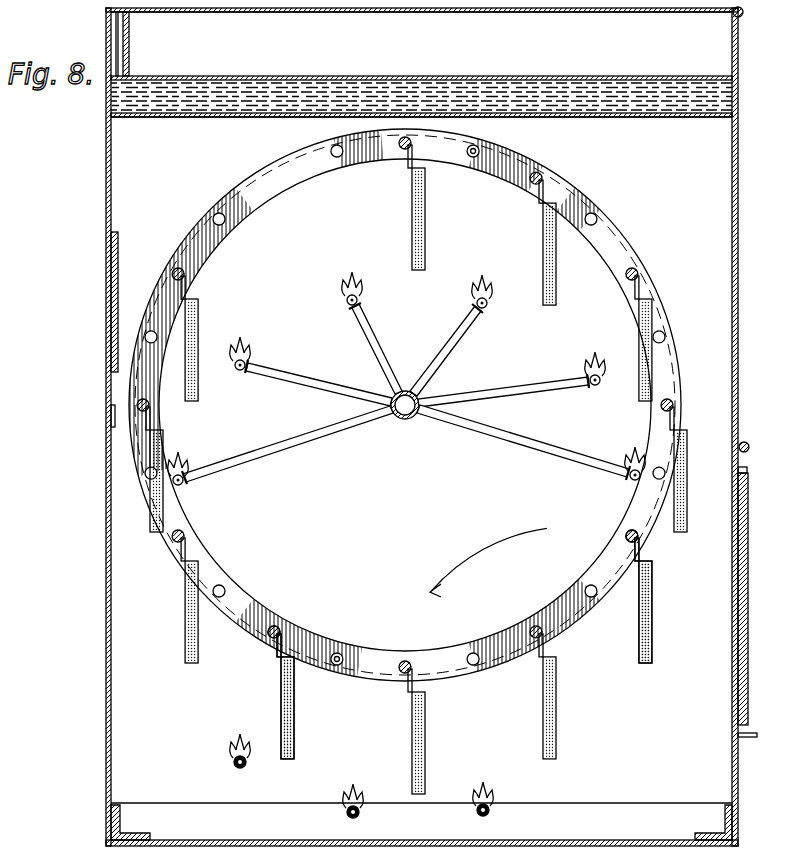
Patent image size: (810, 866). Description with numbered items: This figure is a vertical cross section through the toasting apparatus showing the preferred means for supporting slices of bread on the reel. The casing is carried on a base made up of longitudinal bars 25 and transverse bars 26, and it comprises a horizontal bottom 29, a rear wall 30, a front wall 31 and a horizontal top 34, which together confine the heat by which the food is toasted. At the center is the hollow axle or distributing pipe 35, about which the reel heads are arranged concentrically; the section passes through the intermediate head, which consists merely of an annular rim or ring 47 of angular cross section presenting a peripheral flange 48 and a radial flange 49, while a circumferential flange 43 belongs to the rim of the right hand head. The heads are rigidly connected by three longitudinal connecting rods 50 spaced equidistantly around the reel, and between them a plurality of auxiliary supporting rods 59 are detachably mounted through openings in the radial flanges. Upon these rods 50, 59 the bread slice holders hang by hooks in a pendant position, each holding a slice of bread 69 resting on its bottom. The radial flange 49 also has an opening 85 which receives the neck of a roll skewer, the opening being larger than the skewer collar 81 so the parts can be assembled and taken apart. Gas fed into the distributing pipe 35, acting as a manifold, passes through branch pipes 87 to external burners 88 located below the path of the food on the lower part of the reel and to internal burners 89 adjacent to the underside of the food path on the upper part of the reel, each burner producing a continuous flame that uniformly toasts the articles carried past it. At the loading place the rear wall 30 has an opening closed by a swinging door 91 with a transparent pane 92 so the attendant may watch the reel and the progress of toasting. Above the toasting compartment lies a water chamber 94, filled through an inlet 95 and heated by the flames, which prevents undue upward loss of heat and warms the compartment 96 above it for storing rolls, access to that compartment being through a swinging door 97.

The longitudinal bar 25 is at (124, 836).
The transverse bar 26 is at (421, 817).
The horizontal bottom 29 is at (505, 845).
The rear wall 30 is at (738, 346).
The front wall 31 is at (108, 585).
The horizontal top 34 is at (232, 112).
The axle or distributing pipe 35 is at (405, 420).
The circumferential flange 43 is at (108, 318).
The annular rim or ring 47 is at (590, 590).
The peripheral flange 48 is at (588, 611).
The radial flange 49 is at (542, 615).
The longitudinal connecting rod 50 is at (404, 152).
The auxiliary supporting rod 59 is at (532, 186).
The slice of bread 69 is at (294, 283).
The collar 81 is at (472, 158).
The opening 85 is at (482, 154).
The branch pipe 87 is at (450, 356).
The external burner 88 is at (248, 768).
The internal burner 89 is at (484, 311).
The swinging door 91 is at (749, 455).
The transparent pane 92 is at (745, 620).
The water chamber 94 is at (658, 100).
The inlet 95 is at (125, 55).
The warming compartment 96 is at (421, 34).
The swinging door 97 is at (739, 48).